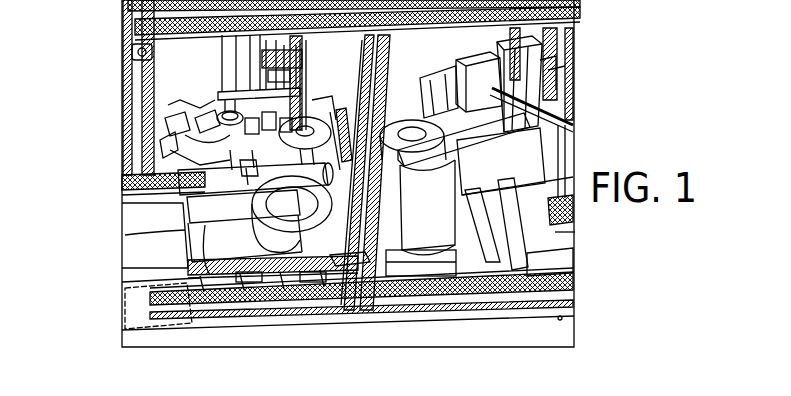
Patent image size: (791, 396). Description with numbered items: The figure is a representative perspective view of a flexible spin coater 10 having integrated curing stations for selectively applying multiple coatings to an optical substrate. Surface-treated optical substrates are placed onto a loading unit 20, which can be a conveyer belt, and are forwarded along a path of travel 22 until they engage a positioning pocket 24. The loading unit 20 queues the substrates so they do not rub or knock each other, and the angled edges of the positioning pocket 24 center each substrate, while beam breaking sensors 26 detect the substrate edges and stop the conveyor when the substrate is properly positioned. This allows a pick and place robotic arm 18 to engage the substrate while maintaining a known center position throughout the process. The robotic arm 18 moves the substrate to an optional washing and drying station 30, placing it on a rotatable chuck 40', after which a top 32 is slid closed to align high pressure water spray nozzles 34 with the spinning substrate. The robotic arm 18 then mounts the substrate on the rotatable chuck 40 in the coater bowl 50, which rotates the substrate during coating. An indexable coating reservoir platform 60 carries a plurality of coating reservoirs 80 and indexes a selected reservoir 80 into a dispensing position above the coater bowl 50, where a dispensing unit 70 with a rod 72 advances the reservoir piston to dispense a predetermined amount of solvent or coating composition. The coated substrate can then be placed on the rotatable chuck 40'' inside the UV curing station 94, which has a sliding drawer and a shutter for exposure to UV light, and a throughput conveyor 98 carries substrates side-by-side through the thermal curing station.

The spin coater 10 is at (88, 72).
The pick and place robotic arm 18 is at (448, 152).
The loading unit 20 is at (258, 280).
The path of travel 22 is at (215, 305).
The positioning pocket 24 is at (322, 300).
The beam breaking sensors 26 is at (308, 285).
The washing and drying station 30 is at (318, 205).
The top 32 is at (200, 250).
The high pressure water spray nozzles 34 is at (190, 212).
The rotatable chuck 40 is at (342, 120).
The rotatable chuck 40' is at (169, 237).
The rotatable chuck 40'' is at (413, 93).
The coater bowl 50 is at (345, 128).
The indexable coating reservoir platform 60 is at (218, 88).
The dispensing unit 70 is at (298, 62).
The rod 72 is at (326, 85).
The coating reservoirs 80 is at (205, 98).
The UV curing station 94 is at (496, 84).
The throughput conveyor 98 is at (536, 226).